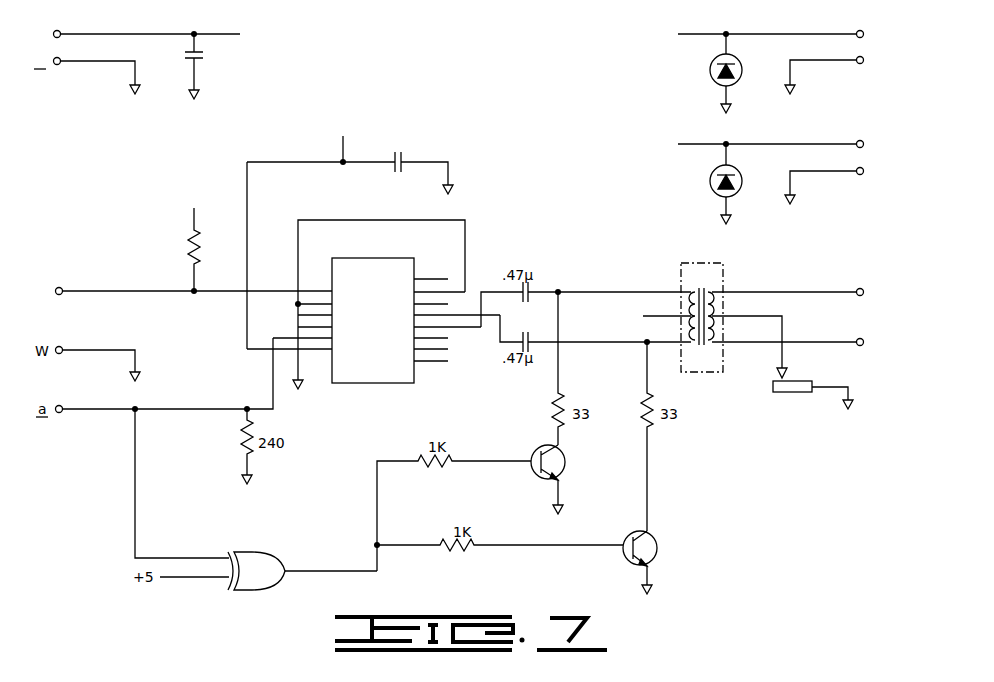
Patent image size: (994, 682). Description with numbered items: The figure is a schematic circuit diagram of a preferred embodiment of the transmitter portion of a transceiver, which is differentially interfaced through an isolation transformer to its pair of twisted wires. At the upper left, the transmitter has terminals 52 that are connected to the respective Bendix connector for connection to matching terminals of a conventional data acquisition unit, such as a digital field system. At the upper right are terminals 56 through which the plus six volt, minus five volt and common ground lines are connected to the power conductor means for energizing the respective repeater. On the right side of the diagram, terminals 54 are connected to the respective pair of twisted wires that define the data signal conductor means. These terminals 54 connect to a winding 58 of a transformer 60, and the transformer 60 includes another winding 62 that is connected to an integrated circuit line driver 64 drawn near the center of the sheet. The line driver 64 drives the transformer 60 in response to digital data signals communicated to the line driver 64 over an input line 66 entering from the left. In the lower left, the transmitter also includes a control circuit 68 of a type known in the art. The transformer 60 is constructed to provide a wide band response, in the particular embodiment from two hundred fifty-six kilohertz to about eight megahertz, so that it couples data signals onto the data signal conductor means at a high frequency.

The terminals 52 is at (63, 29).
The terminals 54 is at (856, 287).
The terminals 56 is at (857, 32).
The winding 58 is at (726, 300).
The transformer 60 is at (700, 262).
The winding 62 is at (688, 300).
The integrated circuit line driver 64 is at (376, 386).
The input line 66 is at (107, 291).
The control circuit 68 is at (224, 594).